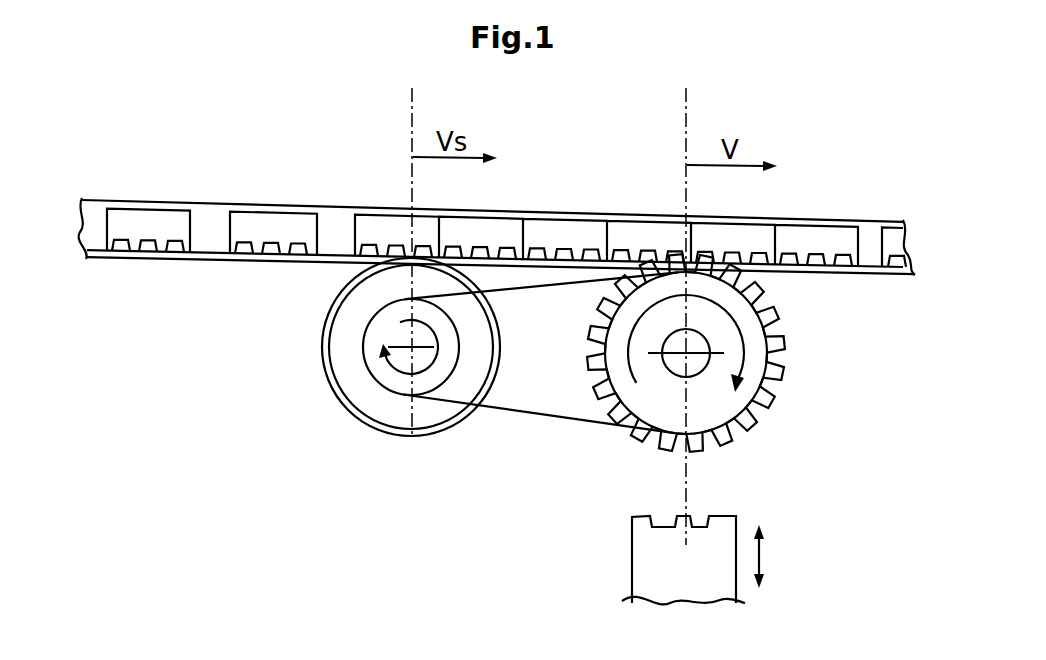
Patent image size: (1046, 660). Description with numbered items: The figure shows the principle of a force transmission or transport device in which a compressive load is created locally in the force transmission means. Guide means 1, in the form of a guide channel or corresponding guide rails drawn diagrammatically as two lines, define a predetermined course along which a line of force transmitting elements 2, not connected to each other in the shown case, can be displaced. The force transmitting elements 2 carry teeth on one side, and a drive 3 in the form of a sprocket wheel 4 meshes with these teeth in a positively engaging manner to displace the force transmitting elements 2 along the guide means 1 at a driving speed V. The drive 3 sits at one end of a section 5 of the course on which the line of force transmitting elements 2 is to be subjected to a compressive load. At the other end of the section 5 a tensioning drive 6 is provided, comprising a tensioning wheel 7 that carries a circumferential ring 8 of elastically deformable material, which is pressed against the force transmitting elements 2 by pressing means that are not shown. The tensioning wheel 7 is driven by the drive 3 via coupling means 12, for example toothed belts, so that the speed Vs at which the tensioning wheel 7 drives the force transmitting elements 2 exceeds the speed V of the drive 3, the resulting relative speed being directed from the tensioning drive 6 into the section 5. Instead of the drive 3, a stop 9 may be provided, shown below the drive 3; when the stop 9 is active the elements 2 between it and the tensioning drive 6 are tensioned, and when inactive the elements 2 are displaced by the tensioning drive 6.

The guide means 1 is at (210, 201).
The force transmitting elements 2 is at (273, 228).
The drive 3 is at (803, 336).
The sprocket wheel 4 is at (718, 417).
The section 5 is at (676, 114).
The tensioning drive 6 is at (309, 382).
The tensioning wheel 7 is at (362, 392).
The circumferential ring 8 is at (450, 424).
The stop 9 is at (690, 581).
The coupling means 12 is at (560, 414).